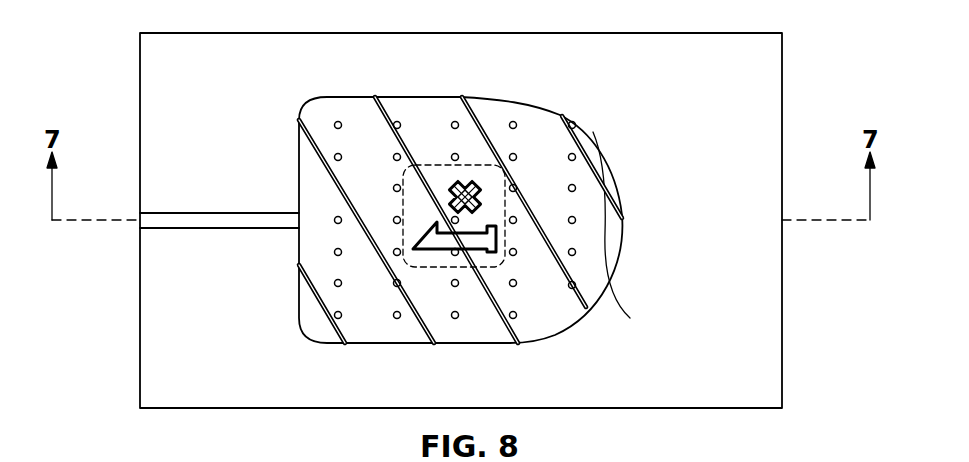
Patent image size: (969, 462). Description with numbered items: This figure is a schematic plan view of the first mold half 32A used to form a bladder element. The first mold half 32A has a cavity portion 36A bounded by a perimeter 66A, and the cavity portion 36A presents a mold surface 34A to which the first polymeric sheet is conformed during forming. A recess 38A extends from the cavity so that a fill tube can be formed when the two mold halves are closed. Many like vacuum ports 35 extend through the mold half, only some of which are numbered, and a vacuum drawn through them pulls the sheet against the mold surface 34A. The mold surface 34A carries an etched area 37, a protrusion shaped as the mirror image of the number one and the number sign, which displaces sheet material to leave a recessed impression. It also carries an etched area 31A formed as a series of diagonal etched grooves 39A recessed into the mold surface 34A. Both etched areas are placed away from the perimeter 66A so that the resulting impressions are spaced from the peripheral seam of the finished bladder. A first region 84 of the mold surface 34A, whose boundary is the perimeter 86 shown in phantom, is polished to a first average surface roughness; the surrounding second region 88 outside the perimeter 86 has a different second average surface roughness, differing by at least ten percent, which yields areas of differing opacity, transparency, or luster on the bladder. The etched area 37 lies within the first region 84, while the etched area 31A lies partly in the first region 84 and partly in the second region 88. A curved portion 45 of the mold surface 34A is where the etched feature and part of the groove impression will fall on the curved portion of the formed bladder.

The first mold half 32A is at (765, 82).
The recess 38A is at (165, 213).
The mold surface 34A is at (538, 134).
The perimeter 66A is at (593, 132).
The cavity portion 36A is at (400, 112).
The second region 88 is at (345, 112).
The etched area 31A is at (383, 260).
The etched grooves 39A is at (322, 304).
The vacuum ports 35 is at (338, 188).
The first region 84 is at (481, 97).
The perimeter 86 is at (463, 167).
The etched area 37 is at (483, 195).
The curved portion 45 is at (497, 322).